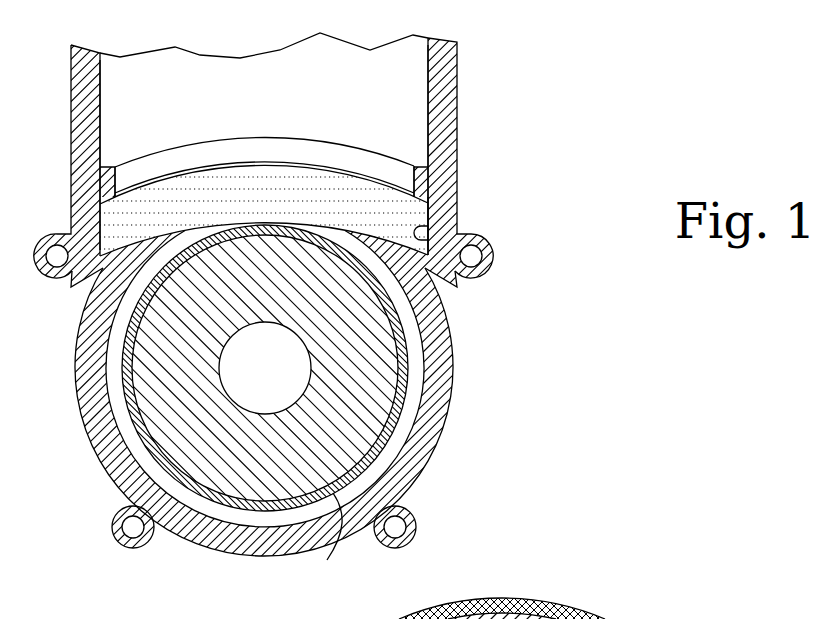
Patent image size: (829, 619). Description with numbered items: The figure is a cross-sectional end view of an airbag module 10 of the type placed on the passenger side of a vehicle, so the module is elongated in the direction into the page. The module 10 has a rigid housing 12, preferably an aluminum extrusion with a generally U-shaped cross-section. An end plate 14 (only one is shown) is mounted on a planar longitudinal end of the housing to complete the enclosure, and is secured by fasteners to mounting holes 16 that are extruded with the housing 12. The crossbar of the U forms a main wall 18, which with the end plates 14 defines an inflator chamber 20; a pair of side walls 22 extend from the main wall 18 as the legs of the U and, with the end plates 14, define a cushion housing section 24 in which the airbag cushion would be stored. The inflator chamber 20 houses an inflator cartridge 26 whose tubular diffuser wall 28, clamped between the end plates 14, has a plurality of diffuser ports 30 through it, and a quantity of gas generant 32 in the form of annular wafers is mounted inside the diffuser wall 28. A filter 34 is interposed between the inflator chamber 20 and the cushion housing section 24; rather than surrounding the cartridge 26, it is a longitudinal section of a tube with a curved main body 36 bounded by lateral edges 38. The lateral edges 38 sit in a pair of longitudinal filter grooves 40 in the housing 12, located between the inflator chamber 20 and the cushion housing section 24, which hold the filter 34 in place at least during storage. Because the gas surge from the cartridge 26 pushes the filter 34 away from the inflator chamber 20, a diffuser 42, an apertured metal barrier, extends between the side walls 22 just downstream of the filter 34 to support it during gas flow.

The airbag module 10 is at (480, 131).
The housing 12 is at (457, 90).
The end plate 14 is at (415, 362).
The mounting holes 16 is at (50, 243).
The main wall 18 is at (197, 235).
The inflator chamber 20 is at (403, 428).
The side walls 22 is at (100, 95).
The cushion housing section 24 is at (185, 67).
The inflator cartridge 26 is at (122, 372).
The tubular diffuser wall 28 is at (125, 417).
The diffuser ports 30 is at (333, 493).
The gas generant 32 is at (220, 392).
The filter 34 is at (355, 205).
The main body 36 is at (268, 185).
The lateral edges 38 is at (428, 207).
The filter grooves 40 is at (428, 230).
The diffuser 42 is at (148, 153).